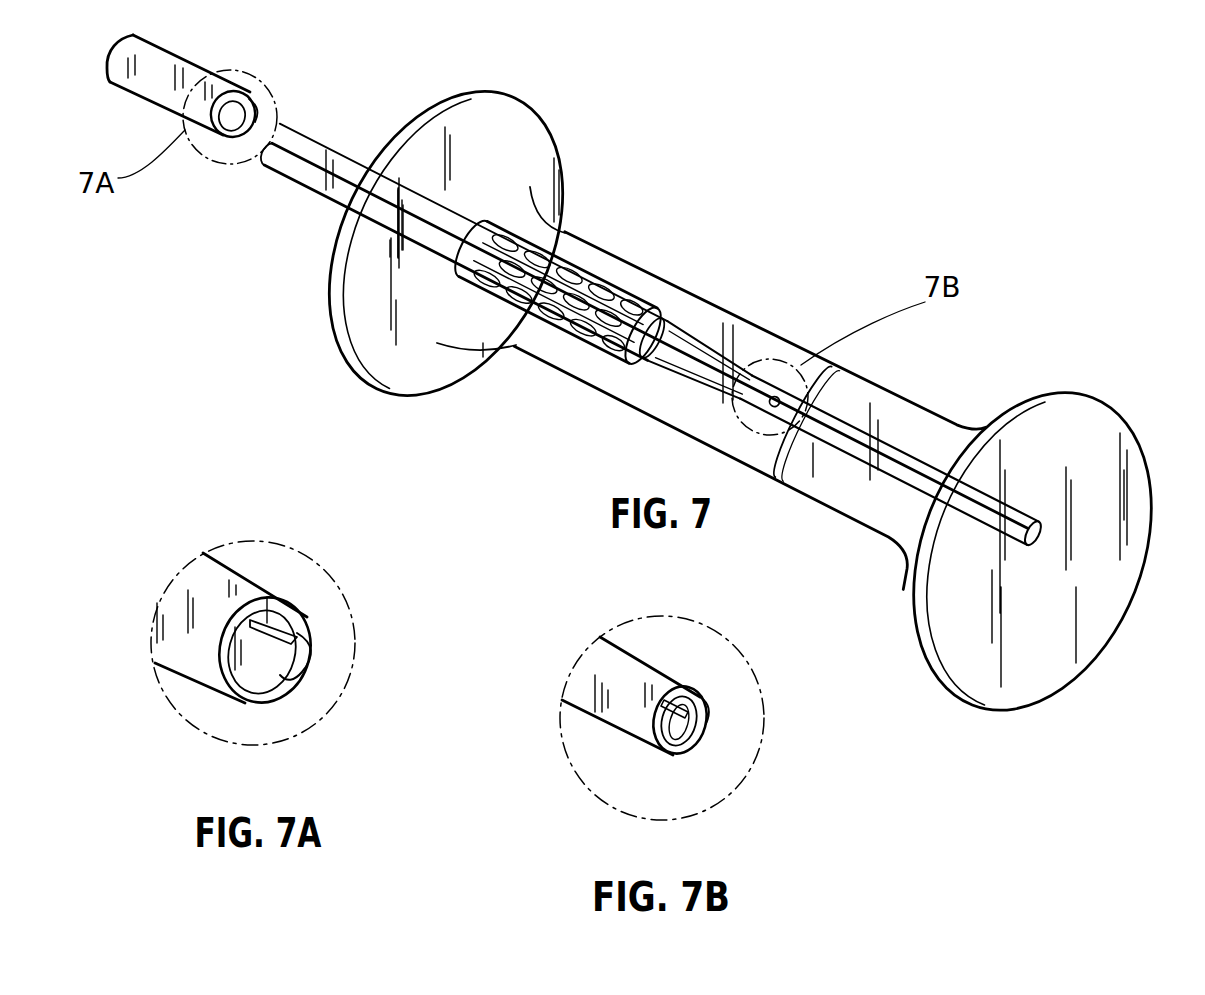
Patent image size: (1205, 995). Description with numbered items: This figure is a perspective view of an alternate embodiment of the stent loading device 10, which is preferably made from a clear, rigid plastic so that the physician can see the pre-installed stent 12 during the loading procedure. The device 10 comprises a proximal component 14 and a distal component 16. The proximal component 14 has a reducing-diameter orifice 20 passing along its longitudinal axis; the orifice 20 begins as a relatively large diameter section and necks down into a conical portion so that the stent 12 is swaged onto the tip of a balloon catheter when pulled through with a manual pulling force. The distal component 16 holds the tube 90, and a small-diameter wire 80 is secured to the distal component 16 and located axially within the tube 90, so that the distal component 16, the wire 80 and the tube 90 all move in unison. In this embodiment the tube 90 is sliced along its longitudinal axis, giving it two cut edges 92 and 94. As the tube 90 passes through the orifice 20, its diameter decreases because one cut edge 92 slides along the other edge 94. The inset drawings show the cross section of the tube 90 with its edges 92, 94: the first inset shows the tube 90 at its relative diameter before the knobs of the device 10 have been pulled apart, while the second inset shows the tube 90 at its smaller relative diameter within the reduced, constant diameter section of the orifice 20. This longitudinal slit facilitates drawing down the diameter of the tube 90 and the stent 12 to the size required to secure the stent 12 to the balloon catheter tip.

In FIG. 7, the stent loading device 10 is at (846, 316).
In FIG. 7, the stent 12 is at (568, 283).
In FIG. 7, the proximal component 14 is at (672, 286).
In FIG. 7, the distal component 16 is at (916, 405).
In FIG. 7, the orifice 20 is at (739, 346).
In FIG. 7, the wire 80 is at (528, 118).
In FIG. 7, the tube 90 is at (346, 148).
In FIG. 7A, the tube 90 is at (247, 571).
In FIG. 7B, the tube 90 is at (668, 670).
In FIG. 7A, the edge of tube 92 is at (300, 663).
In FIG. 7B, the edge of tube 92 is at (704, 717).
In FIG. 7A, the edge of tube 94 is at (274, 678).
In FIG. 7B, the edge of tube 94 is at (681, 757).